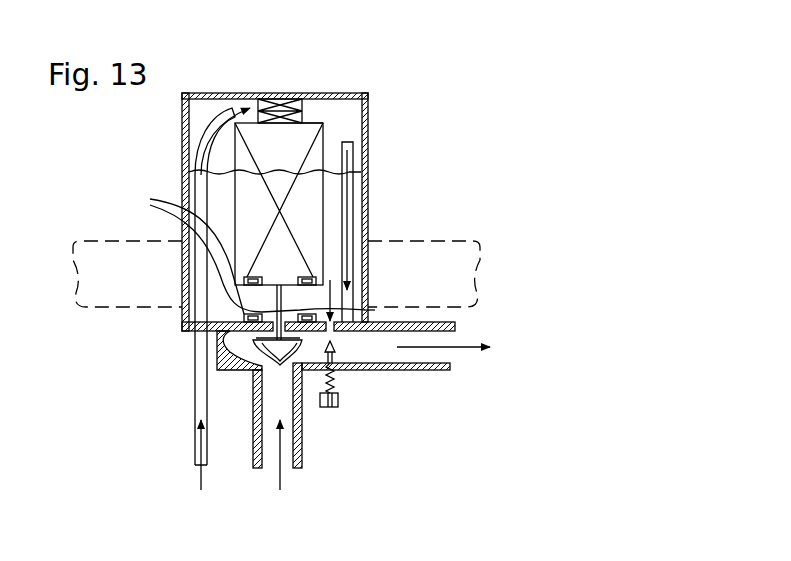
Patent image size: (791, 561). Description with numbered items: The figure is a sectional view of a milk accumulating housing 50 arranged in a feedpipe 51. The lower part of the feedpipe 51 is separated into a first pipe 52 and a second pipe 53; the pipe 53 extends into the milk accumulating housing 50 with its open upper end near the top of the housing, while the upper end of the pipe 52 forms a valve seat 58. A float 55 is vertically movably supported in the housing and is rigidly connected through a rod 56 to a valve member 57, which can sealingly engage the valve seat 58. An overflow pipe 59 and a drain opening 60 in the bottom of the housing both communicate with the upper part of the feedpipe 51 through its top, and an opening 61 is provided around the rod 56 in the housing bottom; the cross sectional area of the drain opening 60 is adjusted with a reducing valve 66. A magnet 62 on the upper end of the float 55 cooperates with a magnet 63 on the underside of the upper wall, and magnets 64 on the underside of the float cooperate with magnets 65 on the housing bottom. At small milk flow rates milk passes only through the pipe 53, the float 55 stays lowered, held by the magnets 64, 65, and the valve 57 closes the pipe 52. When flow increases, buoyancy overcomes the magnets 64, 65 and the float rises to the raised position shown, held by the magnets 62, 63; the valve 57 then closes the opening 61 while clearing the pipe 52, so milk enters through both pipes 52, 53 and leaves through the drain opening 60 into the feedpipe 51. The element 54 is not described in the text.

The milk accumulating housing 50 is at (343, 128).
The feedpipe 51 is at (418, 352).
The first pipe 52 is at (290, 448).
The second pipe 53 is at (193, 445).
The bent tube outlet 54 is at (211, 102).
The float 55 is at (327, 103).
The rod 56 is at (182, 323).
The valve member 57 is at (302, 373).
The valve seat 58 is at (248, 372).
The overflow pipe 59 is at (347, 192).
The drain opening 60 is at (375, 310).
The opening 61 is at (258, 339).
The magnet 62 is at (304, 135).
The magnet 63 is at (279, 99).
The magnets 64 is at (305, 277).
The magnets 65 is at (150, 205).
The reducing valve 66 is at (339, 400).